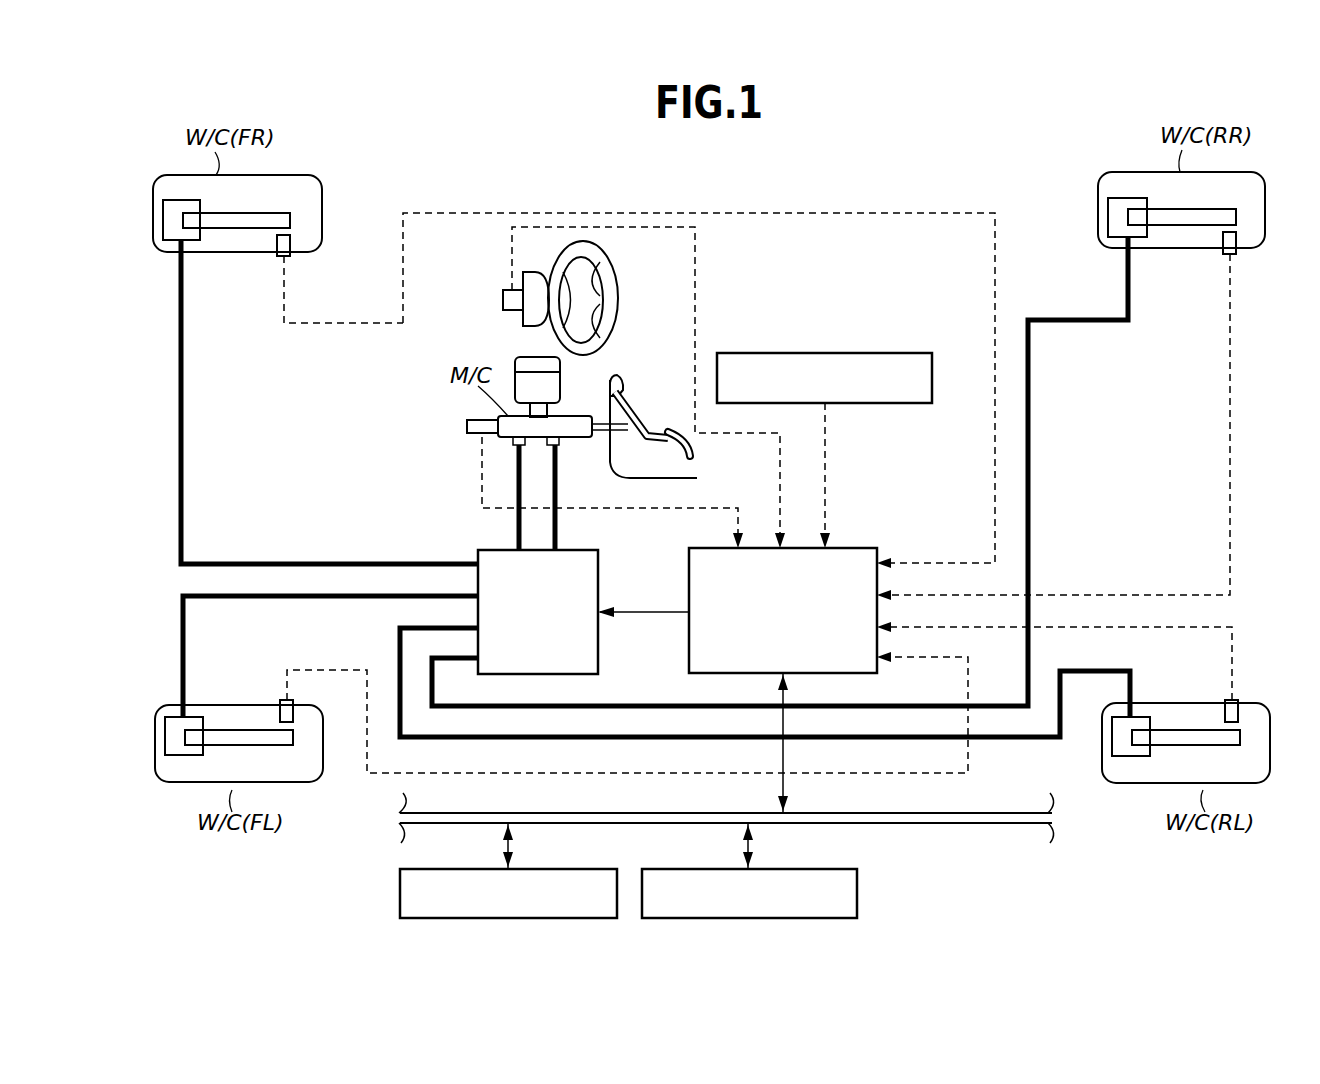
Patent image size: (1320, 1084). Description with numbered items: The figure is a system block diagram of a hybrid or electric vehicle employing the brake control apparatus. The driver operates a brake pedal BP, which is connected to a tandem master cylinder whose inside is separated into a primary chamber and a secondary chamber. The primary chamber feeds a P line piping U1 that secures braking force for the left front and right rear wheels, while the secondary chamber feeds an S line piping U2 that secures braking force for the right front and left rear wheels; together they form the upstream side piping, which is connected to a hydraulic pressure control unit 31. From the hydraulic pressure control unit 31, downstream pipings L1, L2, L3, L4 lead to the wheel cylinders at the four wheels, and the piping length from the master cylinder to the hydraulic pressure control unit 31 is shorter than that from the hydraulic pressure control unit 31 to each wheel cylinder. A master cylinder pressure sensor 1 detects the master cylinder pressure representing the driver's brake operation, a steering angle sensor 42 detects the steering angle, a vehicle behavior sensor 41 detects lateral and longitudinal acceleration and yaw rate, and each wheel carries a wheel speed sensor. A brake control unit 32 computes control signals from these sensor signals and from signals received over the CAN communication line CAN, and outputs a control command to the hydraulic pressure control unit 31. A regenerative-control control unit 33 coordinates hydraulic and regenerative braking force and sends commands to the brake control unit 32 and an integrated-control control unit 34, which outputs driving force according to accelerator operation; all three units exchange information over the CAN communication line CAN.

The master cylinder pressure sensor 1 is at (467, 425).
The hydraulic pressure control unit 31 is at (478, 555).
The brake control unit 32 is at (848, 548).
The regenerative-control control unit 33 is at (565, 869).
The integrated-control control unit 34 is at (805, 869).
The vehicle behavior sensor 41 is at (880, 353).
The steering angle sensor 42 is at (503, 298).
The piping L1 is at (292, 563).
The piping L2 is at (283, 599).
The piping L3 is at (998, 706).
The piping L4 is at (1000, 745).
The P line piping U1 is at (517, 488).
The S line piping U2 is at (558, 490).
The brake pedal BP is at (695, 452).
The CAN communication line CAN is at (1010, 830).